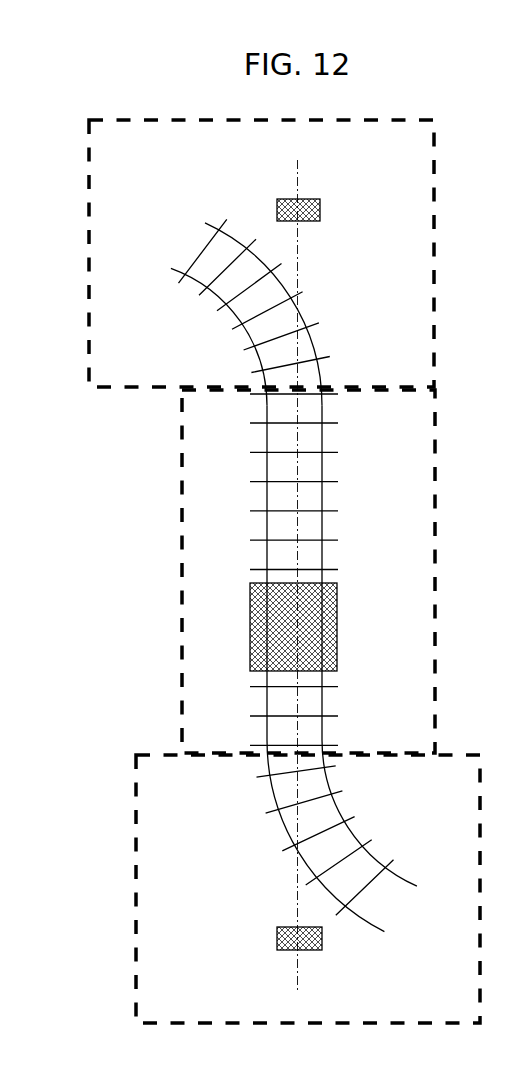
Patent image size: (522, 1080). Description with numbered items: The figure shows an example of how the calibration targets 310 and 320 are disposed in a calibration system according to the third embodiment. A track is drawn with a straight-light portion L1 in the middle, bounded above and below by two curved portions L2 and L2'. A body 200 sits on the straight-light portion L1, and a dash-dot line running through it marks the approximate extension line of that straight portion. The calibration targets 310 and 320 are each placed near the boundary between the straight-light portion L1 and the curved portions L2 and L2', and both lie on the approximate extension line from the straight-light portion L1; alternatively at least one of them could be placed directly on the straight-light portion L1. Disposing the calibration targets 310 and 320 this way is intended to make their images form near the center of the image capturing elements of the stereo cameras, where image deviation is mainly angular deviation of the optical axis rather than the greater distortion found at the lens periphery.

The calibration target 320 is at (320, 210).
The moving body 200 is at (337, 627).
The calibration target 310 is at (277, 938).
The curved portion L2 is at (227, 253).
The straight-light portion L1 is at (182, 565).
The curved portion L2' is at (270, 889).